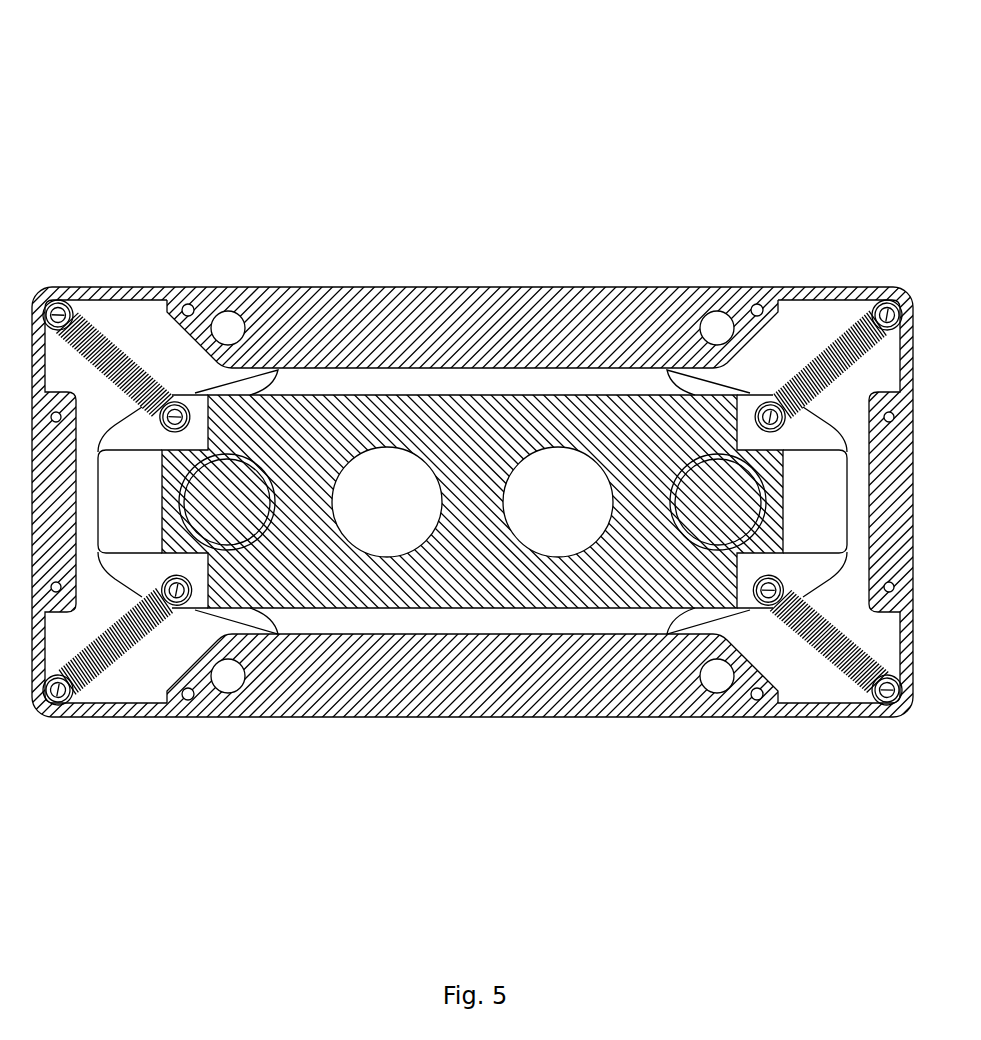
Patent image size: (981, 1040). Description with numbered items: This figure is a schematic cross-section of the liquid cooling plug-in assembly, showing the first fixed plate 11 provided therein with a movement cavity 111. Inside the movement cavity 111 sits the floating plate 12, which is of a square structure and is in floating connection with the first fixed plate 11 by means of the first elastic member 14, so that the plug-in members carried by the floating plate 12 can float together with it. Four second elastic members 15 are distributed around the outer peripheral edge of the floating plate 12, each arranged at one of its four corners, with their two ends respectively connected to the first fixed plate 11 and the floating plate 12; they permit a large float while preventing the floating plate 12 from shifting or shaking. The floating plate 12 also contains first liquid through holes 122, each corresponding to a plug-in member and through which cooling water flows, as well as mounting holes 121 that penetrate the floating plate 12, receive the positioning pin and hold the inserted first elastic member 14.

The first fixed plate 11 is at (311, 296).
The movement cavity 111 is at (378, 382).
The floating plate 12 is at (502, 412).
The mounting hole 121 is at (232, 553).
The first liquid through hole 122 is at (373, 532).
The first elastic member 14 is at (235, 493).
The second elastic member 15 is at (125, 353).